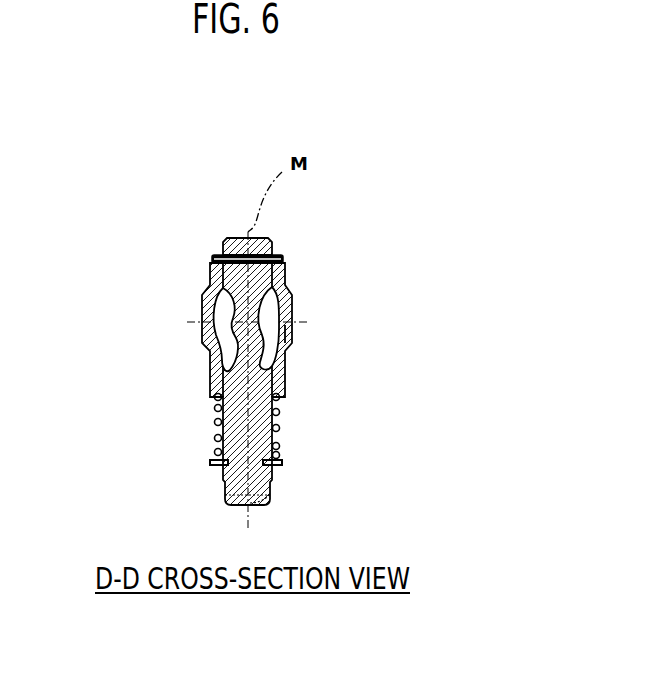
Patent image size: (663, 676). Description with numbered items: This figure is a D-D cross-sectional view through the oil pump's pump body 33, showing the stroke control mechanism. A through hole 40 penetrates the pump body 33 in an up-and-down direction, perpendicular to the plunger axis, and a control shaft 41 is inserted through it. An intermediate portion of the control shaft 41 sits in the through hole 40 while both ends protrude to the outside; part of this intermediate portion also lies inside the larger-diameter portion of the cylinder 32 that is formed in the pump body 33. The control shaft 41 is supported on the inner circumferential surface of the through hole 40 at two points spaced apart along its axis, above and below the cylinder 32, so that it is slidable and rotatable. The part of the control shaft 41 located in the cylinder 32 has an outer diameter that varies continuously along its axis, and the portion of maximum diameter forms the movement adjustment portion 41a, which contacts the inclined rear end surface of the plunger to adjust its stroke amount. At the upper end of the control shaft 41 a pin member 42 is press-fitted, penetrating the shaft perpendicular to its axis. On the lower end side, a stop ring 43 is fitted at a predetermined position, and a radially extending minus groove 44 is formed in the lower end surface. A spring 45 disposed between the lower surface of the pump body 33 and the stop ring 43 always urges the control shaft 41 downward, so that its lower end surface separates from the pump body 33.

The cylinder 32 is at (232, 313).
The pump body 33 is at (292, 305).
The through hole 40 is at (268, 362).
The control shaft 41 is at (214, 254).
The movement adjustment portion 41a is at (292, 334).
The pin member 42 is at (283, 255).
The stop ring 43 is at (214, 463).
The groove 44 is at (268, 500).
The spring 45 is at (279, 431).